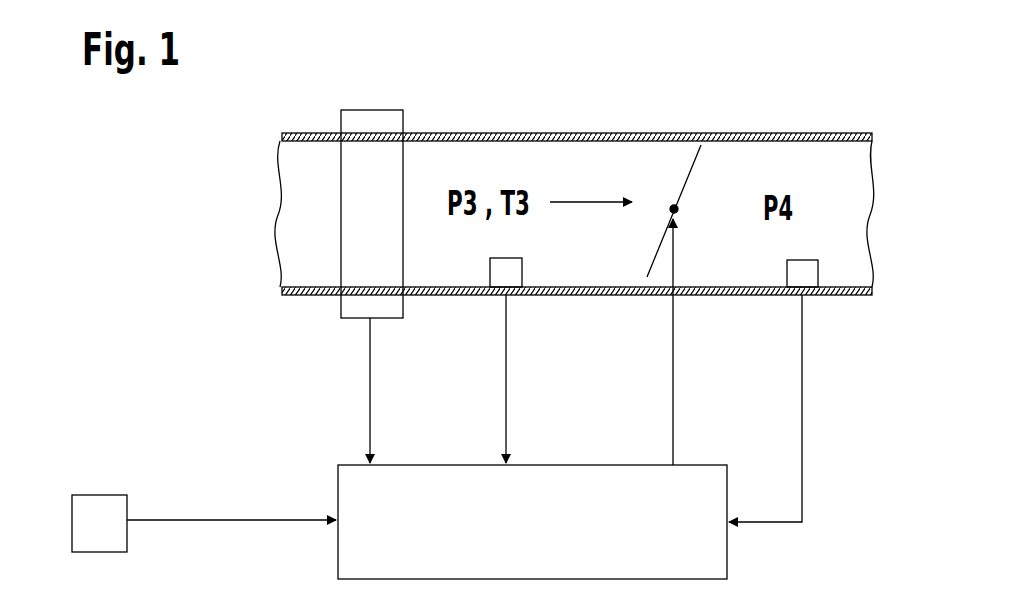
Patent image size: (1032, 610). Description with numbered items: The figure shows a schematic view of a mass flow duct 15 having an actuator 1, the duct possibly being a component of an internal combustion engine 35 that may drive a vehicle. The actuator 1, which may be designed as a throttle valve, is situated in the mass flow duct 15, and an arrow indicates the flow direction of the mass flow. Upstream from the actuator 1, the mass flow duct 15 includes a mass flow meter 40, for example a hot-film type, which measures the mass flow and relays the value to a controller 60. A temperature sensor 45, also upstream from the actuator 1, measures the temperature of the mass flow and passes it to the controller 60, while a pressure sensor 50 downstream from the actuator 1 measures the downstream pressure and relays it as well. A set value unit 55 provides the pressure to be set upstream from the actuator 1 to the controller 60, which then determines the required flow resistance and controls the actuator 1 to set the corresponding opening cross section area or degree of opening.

The actuator 1 is at (689, 177).
The mass flow duct 15 is at (492, 135).
The internal combustion engine 35 is at (791, 122).
The mass flow meter 40 is at (373, 123).
The temperature sensor 45 is at (513, 278).
The pressure sensor 50 is at (812, 280).
The set value unit 55 is at (98, 505).
The controller 60 is at (705, 568).